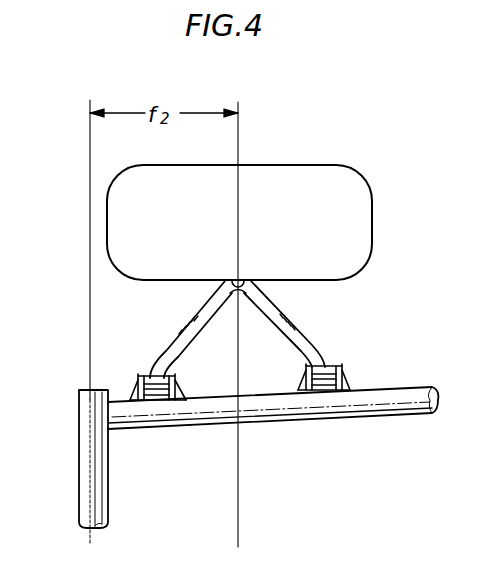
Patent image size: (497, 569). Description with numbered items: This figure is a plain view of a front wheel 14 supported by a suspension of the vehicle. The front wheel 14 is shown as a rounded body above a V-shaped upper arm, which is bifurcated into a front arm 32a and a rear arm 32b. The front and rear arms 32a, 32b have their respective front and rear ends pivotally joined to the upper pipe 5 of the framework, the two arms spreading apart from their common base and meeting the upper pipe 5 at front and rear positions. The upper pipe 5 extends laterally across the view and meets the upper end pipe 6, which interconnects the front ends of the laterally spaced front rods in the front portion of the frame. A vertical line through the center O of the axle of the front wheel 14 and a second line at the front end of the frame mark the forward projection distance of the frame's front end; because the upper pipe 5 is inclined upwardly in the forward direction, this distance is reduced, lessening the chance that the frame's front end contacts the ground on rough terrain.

The front wheel 14 is at (307, 165).
The front arm 32a is at (200, 320).
The rear arm 32b is at (312, 347).
The upper pipe 5 is at (269, 411).
The upper end pipe 6 is at (88, 477).
The center of the axle O is at (238, 157).